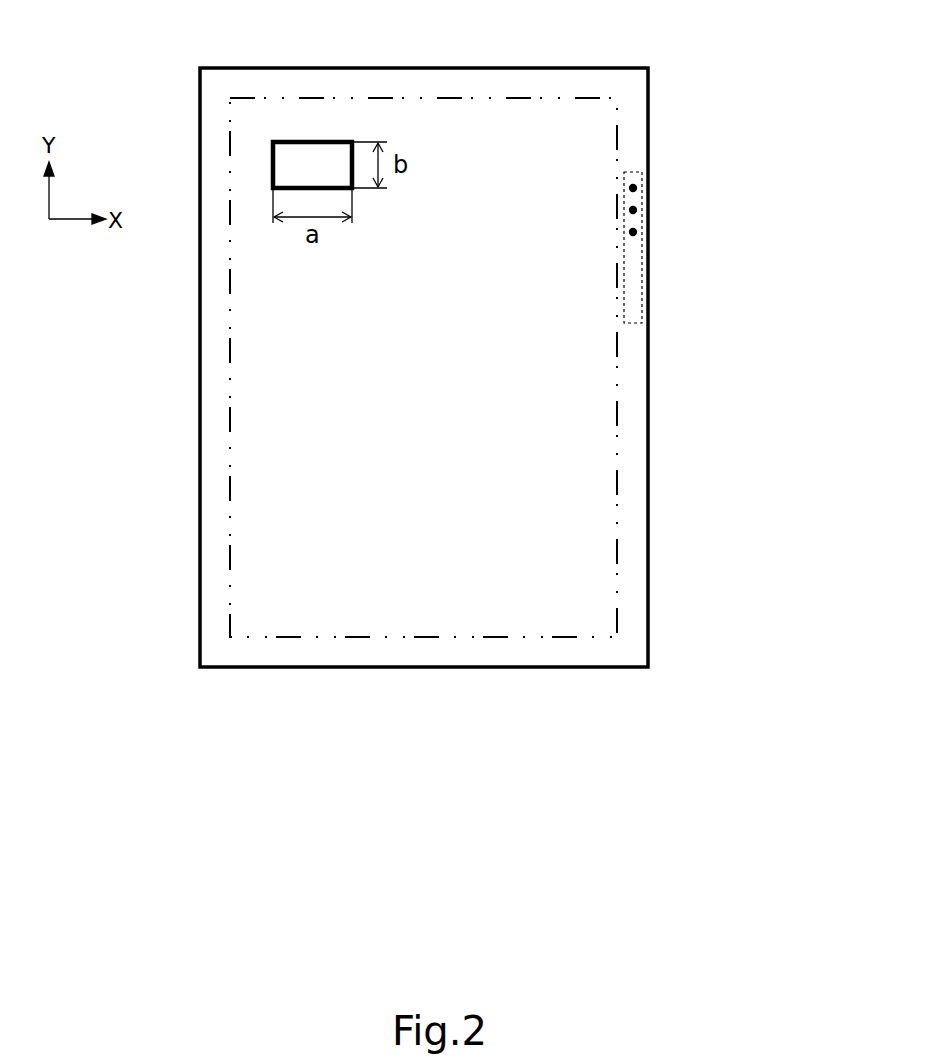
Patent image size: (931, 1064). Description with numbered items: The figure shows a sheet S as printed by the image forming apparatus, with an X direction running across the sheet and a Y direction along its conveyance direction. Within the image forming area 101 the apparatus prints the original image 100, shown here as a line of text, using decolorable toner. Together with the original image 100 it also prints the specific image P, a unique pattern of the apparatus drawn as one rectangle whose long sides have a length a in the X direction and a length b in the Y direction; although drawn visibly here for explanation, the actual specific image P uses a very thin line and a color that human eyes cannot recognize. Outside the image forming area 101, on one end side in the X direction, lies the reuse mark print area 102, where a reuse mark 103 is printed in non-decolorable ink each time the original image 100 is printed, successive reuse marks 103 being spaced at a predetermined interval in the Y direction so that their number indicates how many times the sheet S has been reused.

The sheet S is at (648, 118).
The specific image P is at (312, 142).
The original image 100 is at (330, 378).
The image forming area 101 is at (615, 412).
The reuse mark print area 102 is at (645, 220).
The reuse mark 103 is at (636, 186).